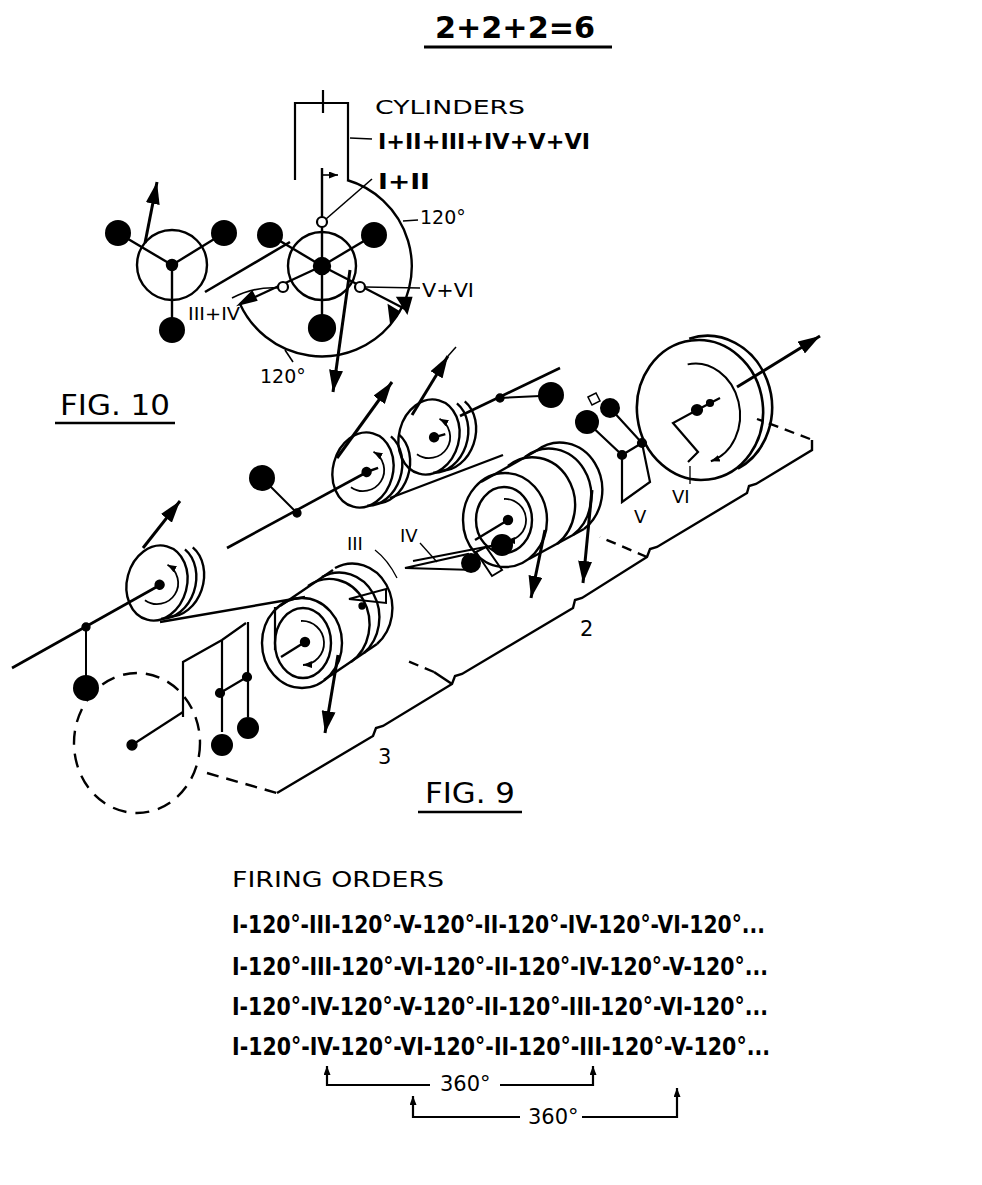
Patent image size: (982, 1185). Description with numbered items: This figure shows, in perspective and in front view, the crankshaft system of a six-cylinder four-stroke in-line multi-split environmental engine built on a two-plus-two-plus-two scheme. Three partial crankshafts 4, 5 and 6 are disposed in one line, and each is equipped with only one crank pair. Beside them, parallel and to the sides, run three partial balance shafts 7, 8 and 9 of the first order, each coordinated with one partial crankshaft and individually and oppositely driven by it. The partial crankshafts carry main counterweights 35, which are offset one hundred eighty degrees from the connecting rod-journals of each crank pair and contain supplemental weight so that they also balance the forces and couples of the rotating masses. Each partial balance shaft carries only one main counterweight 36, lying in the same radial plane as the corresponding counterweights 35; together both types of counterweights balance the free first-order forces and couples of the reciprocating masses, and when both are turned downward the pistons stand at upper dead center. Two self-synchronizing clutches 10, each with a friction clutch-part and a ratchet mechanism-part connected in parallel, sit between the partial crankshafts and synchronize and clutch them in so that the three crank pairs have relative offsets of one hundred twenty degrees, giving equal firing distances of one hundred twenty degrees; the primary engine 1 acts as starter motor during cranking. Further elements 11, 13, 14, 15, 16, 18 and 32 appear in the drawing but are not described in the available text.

In FIG. 9, the primary engine 1 is at (196, 654).
In FIG. 10, the partial crankshaft 4 is at (365, 242).
In FIG. 9, the partial crankshaft 4 is at (683, 415).
In FIG. 10, the partial crankshaft 5 is at (365, 242).
In FIG. 9, the partial crankshaft 5 is at (455, 575).
In FIG. 10, the partial crankshaft 6 is at (345, 264).
In FIG. 9, the partial crankshaft 6 is at (158, 730).
In FIG. 10, the first partial balance shaft 7 is at (139, 256).
In FIG. 9, the first partial balance shaft 7 is at (527, 386).
In FIG. 10, the second partial balance shaft 8 is at (139, 256).
In FIG. 9, the second partial balance shaft 8 is at (318, 503).
In FIG. 10, the partial balance shaft 9 is at (165, 268).
In FIG. 9, the partial balance shaft 9 is at (58, 641).
In FIG. 9, the self-synchronizing clutch 10 is at (315, 579).
In FIG. 9, the coupling shaft 11 is at (254, 620).
In FIG. 10, the rotation arrow 13 is at (240, 221).
In FIG. 9, the rotation arrow 13 is at (452, 353).
In FIG. 10, the rotation arrow 14 is at (240, 221).
In FIG. 9, the rotation arrow 14 is at (391, 385).
In FIG. 10, the rotation arrow 15 is at (258, 257).
In FIG. 9, the rotation arrow 15 is at (176, 506).
In FIG. 9, the output wheel 16 is at (701, 342).
In FIG. 9, the phantom gear 18 is at (104, 800).
In FIG. 9, the output shaft 32 is at (780, 369).
In FIG. 10, the main counterweights 35 is at (316, 222).
In FIG. 9, the main counterweights 35 is at (592, 392).
In FIG. 10, the main counterweights 36 is at (118, 218).
In FIG. 9, the main counterweights 36 is at (73, 689).